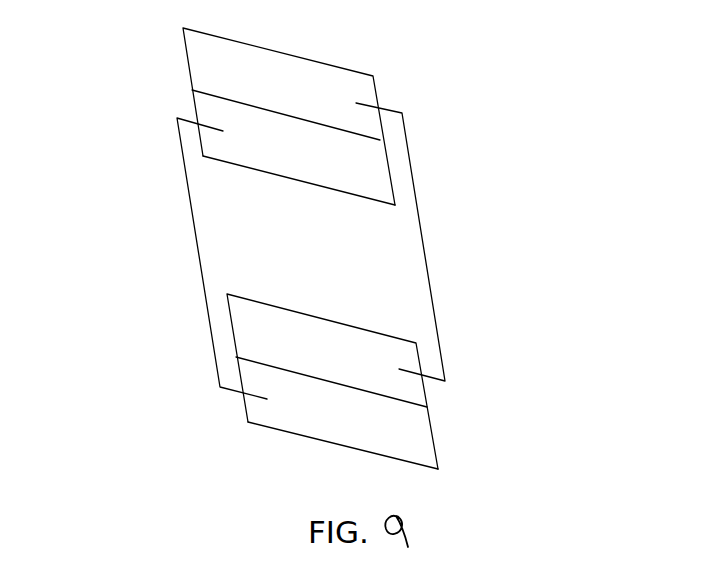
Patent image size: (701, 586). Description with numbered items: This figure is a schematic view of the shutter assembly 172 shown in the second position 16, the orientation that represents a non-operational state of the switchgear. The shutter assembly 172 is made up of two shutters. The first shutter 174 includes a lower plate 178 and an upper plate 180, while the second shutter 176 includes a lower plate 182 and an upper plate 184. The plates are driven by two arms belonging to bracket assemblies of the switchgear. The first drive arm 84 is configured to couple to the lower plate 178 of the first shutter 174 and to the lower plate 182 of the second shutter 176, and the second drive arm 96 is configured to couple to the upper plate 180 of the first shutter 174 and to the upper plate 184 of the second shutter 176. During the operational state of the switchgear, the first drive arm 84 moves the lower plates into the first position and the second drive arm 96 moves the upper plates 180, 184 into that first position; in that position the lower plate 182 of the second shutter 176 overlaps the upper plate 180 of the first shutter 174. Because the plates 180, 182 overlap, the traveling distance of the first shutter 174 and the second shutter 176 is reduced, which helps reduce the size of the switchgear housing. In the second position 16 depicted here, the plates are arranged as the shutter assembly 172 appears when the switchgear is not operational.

The second position 16 is at (508, 158).
The shutter assembly 172 is at (97, 228).
The first drive arm 84 is at (197, 253).
The second drive arm 96 is at (425, 262).
The upper plate 184 is at (365, 91).
The second shutter 176 is at (183, 89).
The lower plate 182 is at (370, 170).
The upper plate 180 is at (410, 360).
The first shutter 174 is at (228, 357).
The lower plate 178 is at (293, 407).